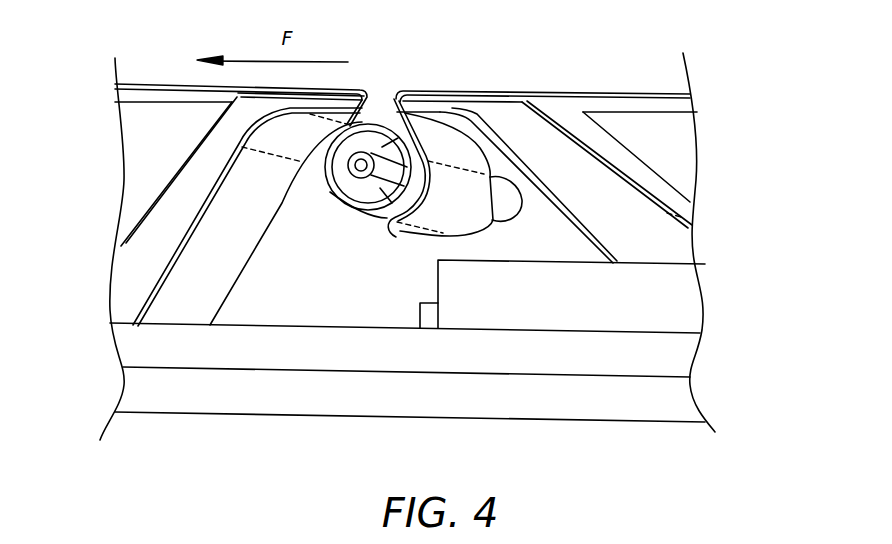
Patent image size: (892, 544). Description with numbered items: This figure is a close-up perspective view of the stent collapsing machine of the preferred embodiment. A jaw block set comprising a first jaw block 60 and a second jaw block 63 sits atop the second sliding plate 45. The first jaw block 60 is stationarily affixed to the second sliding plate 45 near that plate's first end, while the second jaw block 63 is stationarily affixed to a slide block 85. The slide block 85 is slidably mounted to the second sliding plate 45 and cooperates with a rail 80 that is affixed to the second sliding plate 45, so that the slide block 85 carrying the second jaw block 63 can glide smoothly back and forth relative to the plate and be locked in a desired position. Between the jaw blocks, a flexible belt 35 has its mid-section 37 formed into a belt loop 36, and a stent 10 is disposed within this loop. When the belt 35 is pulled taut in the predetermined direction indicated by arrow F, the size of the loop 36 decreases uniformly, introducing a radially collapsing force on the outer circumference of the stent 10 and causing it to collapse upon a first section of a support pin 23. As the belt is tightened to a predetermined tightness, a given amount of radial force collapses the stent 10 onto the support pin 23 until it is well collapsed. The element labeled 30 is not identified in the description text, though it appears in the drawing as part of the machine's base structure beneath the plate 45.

The stent 10 is at (394, 228).
The support pin 23 is at (508, 206).
The base rail 30 is at (265, 392).
The belt 35 is at (622, 104).
The belt loop 36 is at (450, 142).
The belt mid-section 37 is at (453, 218).
The second sliding plate 45 is at (535, 355).
The first jaw block 60 is at (187, 189).
The second jaw block 63 is at (636, 167).
The rail 80 is at (420, 315).
The slide block 85 is at (634, 304).